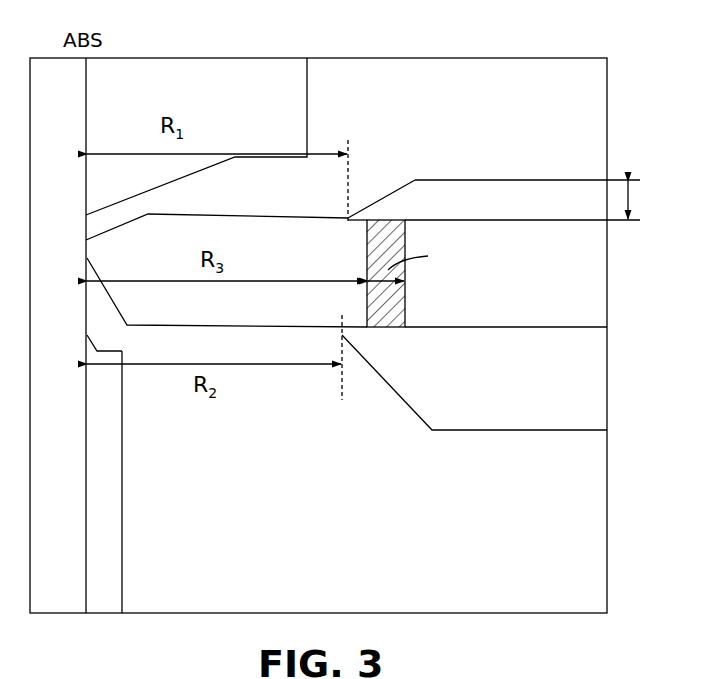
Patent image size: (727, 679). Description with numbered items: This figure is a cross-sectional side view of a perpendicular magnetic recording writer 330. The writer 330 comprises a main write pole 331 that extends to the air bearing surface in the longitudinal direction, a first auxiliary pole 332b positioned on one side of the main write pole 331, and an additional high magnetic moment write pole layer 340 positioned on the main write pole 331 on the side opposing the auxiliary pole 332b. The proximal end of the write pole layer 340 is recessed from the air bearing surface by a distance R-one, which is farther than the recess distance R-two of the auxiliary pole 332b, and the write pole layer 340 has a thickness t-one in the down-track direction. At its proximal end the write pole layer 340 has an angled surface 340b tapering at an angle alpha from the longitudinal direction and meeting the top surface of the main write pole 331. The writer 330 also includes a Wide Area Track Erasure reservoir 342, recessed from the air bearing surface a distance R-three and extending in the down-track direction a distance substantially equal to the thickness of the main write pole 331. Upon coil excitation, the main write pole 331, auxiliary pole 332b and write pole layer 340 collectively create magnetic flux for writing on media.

The writer 330 is at (487, 52).
The main write pole 331 is at (574, 311).
The first auxiliary pole 332b is at (586, 416).
The write pole layer 340 is at (578, 193).
The angled surface 340b is at (393, 192).
The WATER reservoir element 342 is at (385, 329).